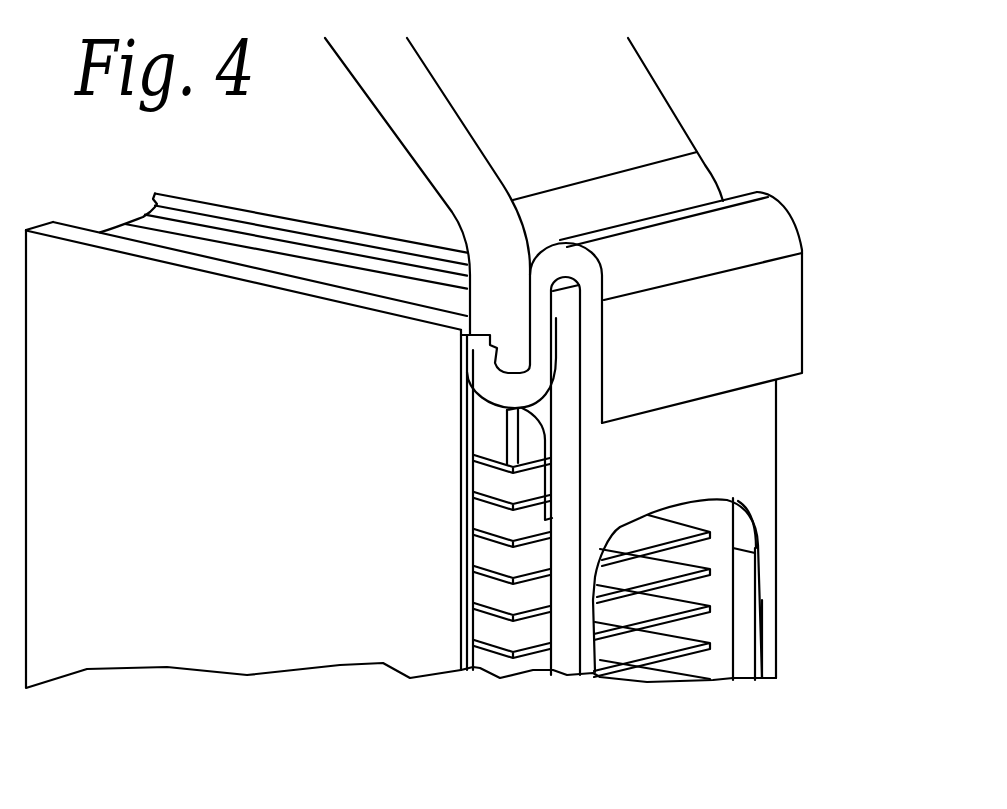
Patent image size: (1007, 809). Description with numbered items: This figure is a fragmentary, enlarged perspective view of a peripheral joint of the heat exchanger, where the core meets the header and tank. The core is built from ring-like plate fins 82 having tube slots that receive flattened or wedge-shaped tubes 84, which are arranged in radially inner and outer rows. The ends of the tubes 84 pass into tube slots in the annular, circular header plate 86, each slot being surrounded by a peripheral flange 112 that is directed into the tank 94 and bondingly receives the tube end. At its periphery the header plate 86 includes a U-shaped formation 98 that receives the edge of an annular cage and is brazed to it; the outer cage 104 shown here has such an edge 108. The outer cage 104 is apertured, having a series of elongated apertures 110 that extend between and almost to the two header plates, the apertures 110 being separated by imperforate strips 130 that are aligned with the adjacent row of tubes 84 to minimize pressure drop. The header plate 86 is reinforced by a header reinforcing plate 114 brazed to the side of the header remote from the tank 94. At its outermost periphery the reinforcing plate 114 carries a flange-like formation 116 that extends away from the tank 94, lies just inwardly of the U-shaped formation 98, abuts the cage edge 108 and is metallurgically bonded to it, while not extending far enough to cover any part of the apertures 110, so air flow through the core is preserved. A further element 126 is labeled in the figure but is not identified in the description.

The plate fins 82 is at (665, 615).
The tubes 84 is at (227, 490).
The header plate 86 is at (180, 240).
The tank 94 is at (615, 72).
The U-shaped formation 98 is at (777, 297).
The outer cage 104 is at (740, 472).
The cage edge 108 is at (573, 343).
The elongated apertures 110 is at (750, 593).
The peripheral flanges 112 is at (263, 303).
The header reinforcing plate 114 is at (487, 408).
The flange-like formation 116 is at (547, 478).
The tab 126 is at (490, 442).
The imperforate strips 130 is at (767, 648).